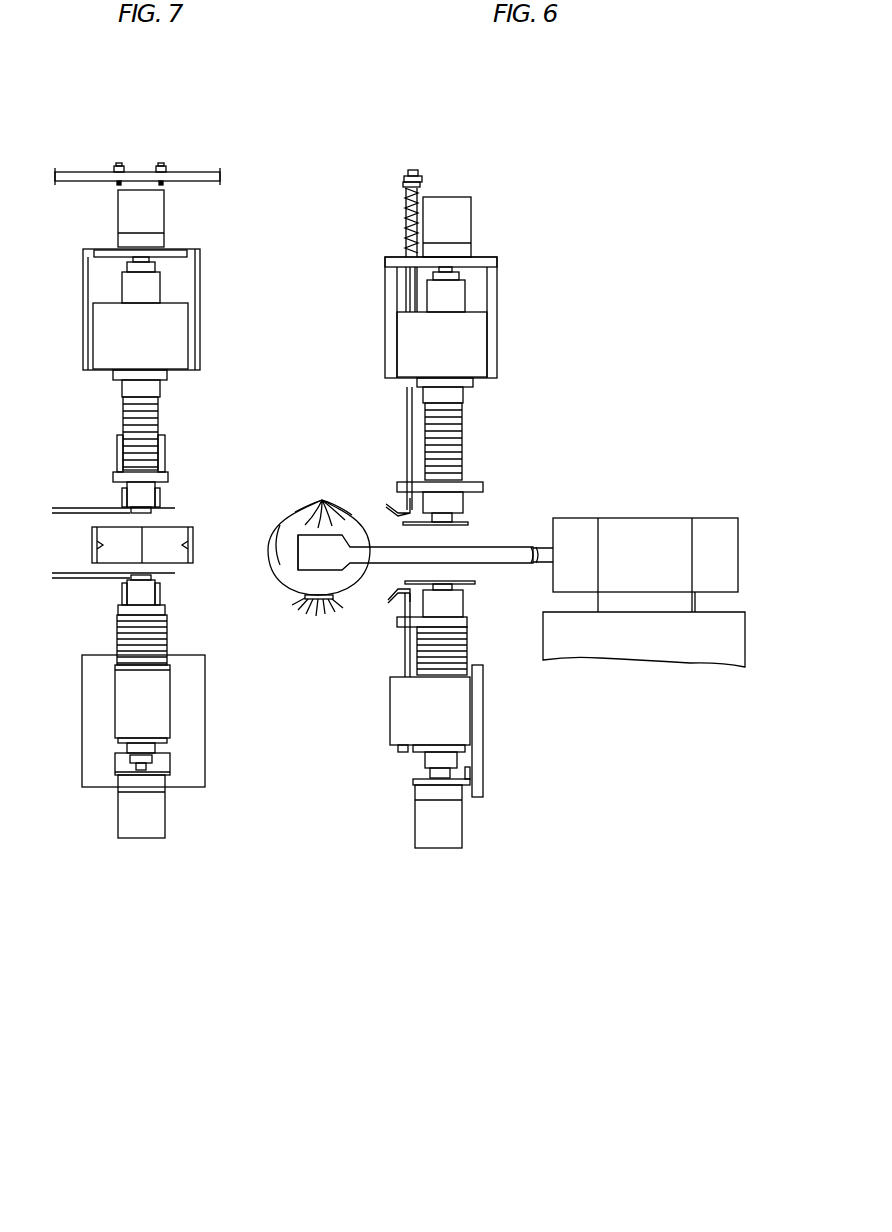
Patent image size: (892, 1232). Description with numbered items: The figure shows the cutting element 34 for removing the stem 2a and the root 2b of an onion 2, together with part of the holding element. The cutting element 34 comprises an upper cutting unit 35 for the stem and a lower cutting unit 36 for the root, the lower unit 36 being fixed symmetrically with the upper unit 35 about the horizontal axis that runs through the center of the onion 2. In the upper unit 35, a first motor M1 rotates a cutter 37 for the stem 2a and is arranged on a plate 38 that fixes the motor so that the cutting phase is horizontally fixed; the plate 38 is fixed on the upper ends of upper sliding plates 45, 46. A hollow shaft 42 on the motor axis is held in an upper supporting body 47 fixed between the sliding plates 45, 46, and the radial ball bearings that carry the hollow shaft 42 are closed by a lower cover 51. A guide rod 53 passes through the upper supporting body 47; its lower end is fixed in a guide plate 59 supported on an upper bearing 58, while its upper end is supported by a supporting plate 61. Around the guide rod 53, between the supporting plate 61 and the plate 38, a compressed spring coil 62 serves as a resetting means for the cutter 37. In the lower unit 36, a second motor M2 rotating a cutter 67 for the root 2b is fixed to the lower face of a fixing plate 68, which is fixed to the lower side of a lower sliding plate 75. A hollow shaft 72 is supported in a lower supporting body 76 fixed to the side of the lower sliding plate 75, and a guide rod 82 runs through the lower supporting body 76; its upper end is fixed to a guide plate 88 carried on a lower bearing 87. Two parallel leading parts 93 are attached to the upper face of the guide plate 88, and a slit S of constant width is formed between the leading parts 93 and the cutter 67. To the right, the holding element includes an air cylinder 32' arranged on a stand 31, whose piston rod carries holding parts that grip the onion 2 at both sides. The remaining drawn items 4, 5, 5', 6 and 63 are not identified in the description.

In FIG. 7, the supporting plate for the guide rod 61 is at (177, 172).
In FIG. 6, the supporting plate for the guide rod 61 is at (404, 183).
In FIG. 6, the compressed spring coil 62 is at (405, 218).
In FIG. 7, the first motor M1 is at (165, 206).
In FIG. 6, the first motor M1 is at (450, 203).
In FIG. 7, the second motor M2 is at (155, 820).
In FIG. 6, the second motor M2 is at (453, 850).
In FIG. 7, the plate for fixing the motor 38 is at (180, 250).
In FIG. 6, the plate for fixing the motor 38 is at (497, 262).
In FIG. 7, the hollow shaft 42 is at (122, 288).
In FIG. 6, the hollow shaft 42 is at (455, 296).
In FIG. 6, the upper sliding plate 45 is at (385, 292).
In FIG. 7, the upper sliding plate 46 is at (200, 270).
In FIG. 6, the upper sliding plate 46 is at (497, 316).
In FIG. 7, the upper supporting body 47 is at (190, 338).
In FIG. 6, the upper supporting body 47 is at (475, 354).
In FIG. 7, the lower cover 51 is at (165, 378).
In FIG. 6, the lower cover 51 is at (473, 382).
In FIG. 7, the guide rod 53 is at (119, 446).
In FIG. 6, the guide rod 53 is at (407, 420).
In FIG. 7, the upper cutting unit 35 is at (201, 407).
In FIG. 6, the upper cutting unit 35 is at (376, 348).
In FIG. 7, the guide plate 59 is at (168, 478).
In FIG. 6, the guide plate 59 is at (483, 485).
In FIG. 7, the pin / stopper 63 is at (122, 497).
In FIG. 6, the pin / stopper 63 is at (388, 500).
In FIG. 6, the cutting element 34 is at (390, 512).
In FIG. 6, the upper bearing 58 is at (455, 505).
In FIG. 7, the cutter for the stem 37 is at (175, 508).
In FIG. 6, the cutter for the stem 37 is at (468, 524).
In FIG. 6, the holding rod 4 is at (521, 546).
In FIG. 6, the onion 2 is at (300, 516).
In FIG. 6, the stem 2a is at (320, 500).
In FIG. 6, the root 2b is at (305, 602).
In FIG. 7, the holding head 5 is at (200, 556).
In FIG. 6, the holding head 5 is at (278, 570).
In FIG. 7, the holding head half 5' is at (80, 548).
In FIG. 7, the clamp block 6 is at (214, 550).
In FIG. 7, the slit S is at (60, 493).
In FIG. 7, the cutter for the root 67 is at (123, 590).
In FIG. 6, the cutter for the root 67 is at (478, 583).
In FIG. 7, the lower bearing 87 is at (175, 573).
In FIG. 6, the lower bearing 87 is at (460, 607).
In FIG. 7, the guide plate 88 is at (165, 612).
In FIG. 6, the guide plate 88 is at (468, 623).
In FIG. 6, the leading parts 93 is at (388, 600).
In FIG. 6, the guide rod 82 is at (405, 655).
In FIG. 7, the lower cutting unit 36 is at (209, 658).
In FIG. 6, the lower cutting unit 36 is at (378, 708).
In FIG. 7, the lower supporting body 76 is at (165, 690).
In FIG. 6, the lower supporting body 76 is at (405, 693).
In FIG. 7, the lower sliding plate 75 is at (195, 718).
In FIG. 6, the lower sliding plate 75 is at (483, 738).
In FIG. 7, the hollow shaft 72 is at (125, 745).
In FIG. 6, the hollow shaft 72 is at (425, 755).
In FIG. 7, the fixing plate 68 is at (160, 767).
In FIG. 6, the fixing plate 68 is at (415, 781).
In FIG. 6, the air cylinder 32' is at (645, 540).
In FIG. 6, the stand 31 is at (683, 653).